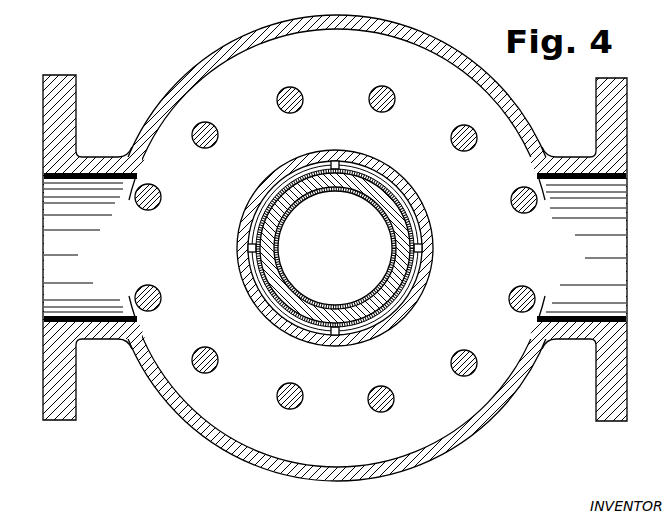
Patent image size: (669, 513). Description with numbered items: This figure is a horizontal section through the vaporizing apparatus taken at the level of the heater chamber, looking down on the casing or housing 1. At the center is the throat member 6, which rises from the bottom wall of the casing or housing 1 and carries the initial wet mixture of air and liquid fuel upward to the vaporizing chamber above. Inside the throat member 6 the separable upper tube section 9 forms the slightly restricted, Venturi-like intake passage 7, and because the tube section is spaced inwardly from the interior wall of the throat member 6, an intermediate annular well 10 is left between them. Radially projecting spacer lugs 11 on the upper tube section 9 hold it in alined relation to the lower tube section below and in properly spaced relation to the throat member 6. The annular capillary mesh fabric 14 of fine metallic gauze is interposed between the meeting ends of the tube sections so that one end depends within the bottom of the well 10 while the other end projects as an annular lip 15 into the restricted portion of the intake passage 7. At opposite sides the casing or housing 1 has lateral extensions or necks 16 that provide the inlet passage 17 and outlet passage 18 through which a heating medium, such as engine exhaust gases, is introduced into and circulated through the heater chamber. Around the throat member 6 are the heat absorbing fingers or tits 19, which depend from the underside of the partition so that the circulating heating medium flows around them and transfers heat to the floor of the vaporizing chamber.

The casing or housing 1 is at (448, 46).
The throat member 6 is at (418, 199).
The intake passage 7 is at (335, 248).
The upper tube section 9 is at (412, 212).
The annular well 10 is at (392, 313).
The spacer lugs 11 is at (353, 157).
The capillary mesh fabric 14 is at (413, 280).
The annular lip 15 is at (388, 239).
The lateral extensions or necks 16 is at (571, 160).
The inlet passage 17 is at (83, 247).
The outlet passage 18 is at (586, 248).
The heat absorbing fingers or tits 19 is at (452, 131).